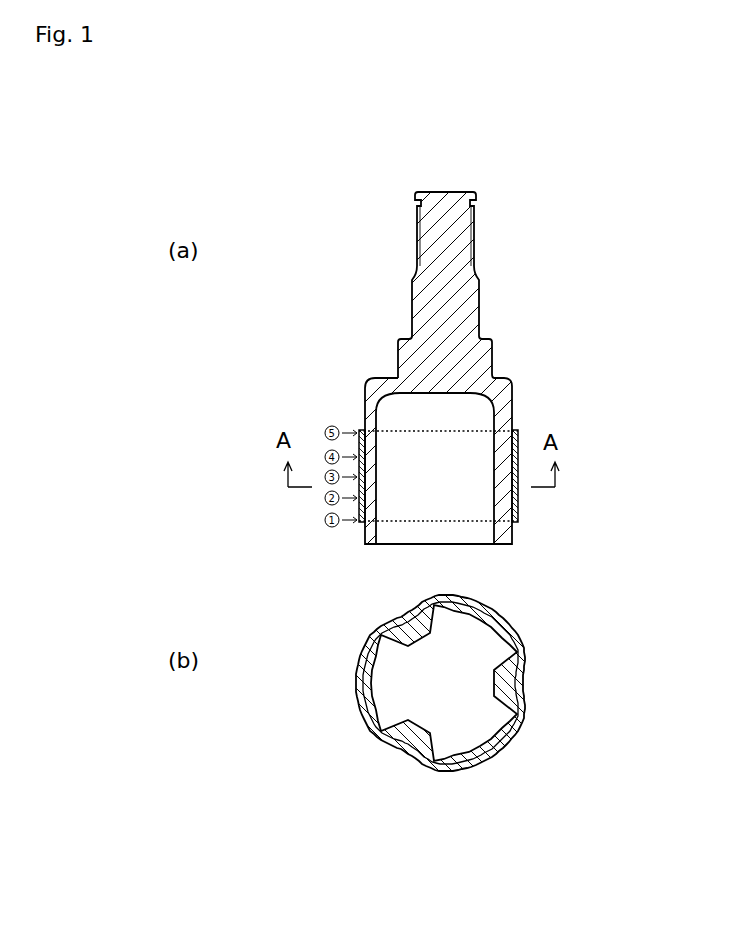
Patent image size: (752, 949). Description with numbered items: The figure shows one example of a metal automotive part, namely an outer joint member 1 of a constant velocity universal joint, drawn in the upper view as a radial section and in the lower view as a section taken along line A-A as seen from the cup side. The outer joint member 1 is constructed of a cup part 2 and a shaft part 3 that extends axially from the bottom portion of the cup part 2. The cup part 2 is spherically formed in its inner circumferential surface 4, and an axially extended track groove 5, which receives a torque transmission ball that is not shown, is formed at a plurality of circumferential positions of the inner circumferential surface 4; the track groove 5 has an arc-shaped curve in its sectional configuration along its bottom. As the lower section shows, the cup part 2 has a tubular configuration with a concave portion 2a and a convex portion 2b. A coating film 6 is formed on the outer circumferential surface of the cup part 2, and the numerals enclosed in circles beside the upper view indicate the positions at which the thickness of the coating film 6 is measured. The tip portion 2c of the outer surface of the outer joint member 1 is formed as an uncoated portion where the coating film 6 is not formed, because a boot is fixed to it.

The outer joint member 1 is at (379, 213).
The cup part 2 is at (504, 417).
The concave portion 2a is at (505, 686).
The convex portion 2b is at (490, 748).
The tip portion 2c is at (513, 532).
The shaft part 3 is at (449, 304).
The inner circumferential surface 4 is at (495, 478).
The track groove 5 is at (385, 689).
The coating film 6 is at (517, 506).